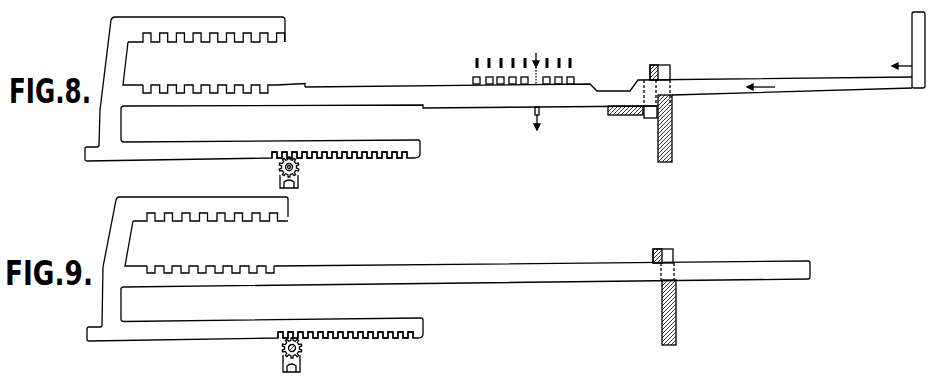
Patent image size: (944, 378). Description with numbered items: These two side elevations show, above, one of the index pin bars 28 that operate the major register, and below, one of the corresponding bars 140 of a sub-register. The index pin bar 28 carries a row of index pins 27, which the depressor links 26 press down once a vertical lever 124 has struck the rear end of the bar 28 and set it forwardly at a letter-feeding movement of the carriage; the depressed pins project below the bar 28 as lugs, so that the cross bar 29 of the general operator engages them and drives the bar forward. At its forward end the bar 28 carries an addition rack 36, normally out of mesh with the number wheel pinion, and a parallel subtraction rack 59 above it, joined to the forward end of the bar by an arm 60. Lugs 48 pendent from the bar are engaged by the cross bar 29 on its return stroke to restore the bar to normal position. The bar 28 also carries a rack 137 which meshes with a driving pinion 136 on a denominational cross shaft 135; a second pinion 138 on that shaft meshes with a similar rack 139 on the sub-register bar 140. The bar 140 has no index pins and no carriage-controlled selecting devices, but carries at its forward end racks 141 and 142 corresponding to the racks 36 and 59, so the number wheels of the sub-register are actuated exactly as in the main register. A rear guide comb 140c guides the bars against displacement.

In FIG. 8, the links 26 is at (489, 57).
In FIG. 8, the index pins 27 is at (486, 81).
In FIG. 8, the index pin bars 28 is at (608, 92).
In FIG. 8, the cross bar 29 is at (608, 113).
In FIG. 8, the addition rack 36 is at (217, 87).
In FIG. 8, the lugs 48 is at (648, 119).
In FIG. 8, the subtraction rack 59 is at (197, 42).
In FIG. 8, the arm 60 is at (125, 62).
In FIG. 8, the vertical levers 124 is at (912, 35).
In FIG. 8, the cross shafts 135 is at (298, 177).
In FIG. 9, the cross shafts 135 is at (280, 353).
In FIG. 8, the driving pinion 136 is at (280, 168).
In FIG. 8, the rack 137 is at (395, 162).
In FIG. 9, the pinion 138 is at (302, 350).
In FIG. 9, the rack 139 is at (373, 338).
In FIG. 9, the bars 140 is at (467, 274).
In FIG. 8, the rear guide comb 140c is at (672, 80).
In FIG. 9, the rear guide comb 140c is at (673, 256).
In FIG. 9, the rack 141 is at (251, 266).
In FIG. 9, the rack 142 is at (258, 222).